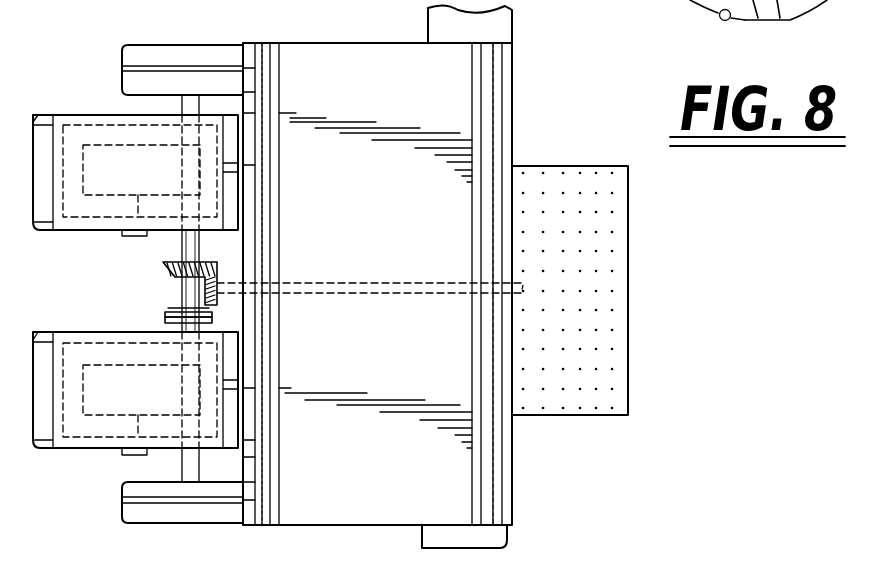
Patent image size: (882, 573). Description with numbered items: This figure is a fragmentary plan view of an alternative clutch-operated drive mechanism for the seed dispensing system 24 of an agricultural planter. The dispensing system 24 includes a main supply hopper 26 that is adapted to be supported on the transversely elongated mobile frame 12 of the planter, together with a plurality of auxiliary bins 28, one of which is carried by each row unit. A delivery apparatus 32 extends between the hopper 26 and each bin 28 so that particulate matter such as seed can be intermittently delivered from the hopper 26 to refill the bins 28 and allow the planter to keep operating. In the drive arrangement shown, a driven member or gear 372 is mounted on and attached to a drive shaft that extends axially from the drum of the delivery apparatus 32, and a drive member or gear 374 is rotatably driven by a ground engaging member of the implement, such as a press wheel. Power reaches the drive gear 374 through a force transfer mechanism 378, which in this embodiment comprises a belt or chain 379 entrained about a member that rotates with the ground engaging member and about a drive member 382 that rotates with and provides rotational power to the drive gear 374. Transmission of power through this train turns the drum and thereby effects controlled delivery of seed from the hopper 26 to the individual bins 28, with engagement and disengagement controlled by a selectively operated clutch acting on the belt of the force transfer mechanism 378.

The mobile frame 12 is at (482, 29).
The seed dispensing system 24 is at (634, 137).
The supply hopper 26 is at (385, 44).
The bins 28 is at (87, 104).
The delivery apparatus 32 is at (559, 161).
The driven gear 372 is at (220, 301).
The drive gear 374 is at (218, 263).
The force transfer mechanism 378 is at (218, 315).
The belt or chain 379 is at (165, 316).
The drive member 382 is at (172, 311).